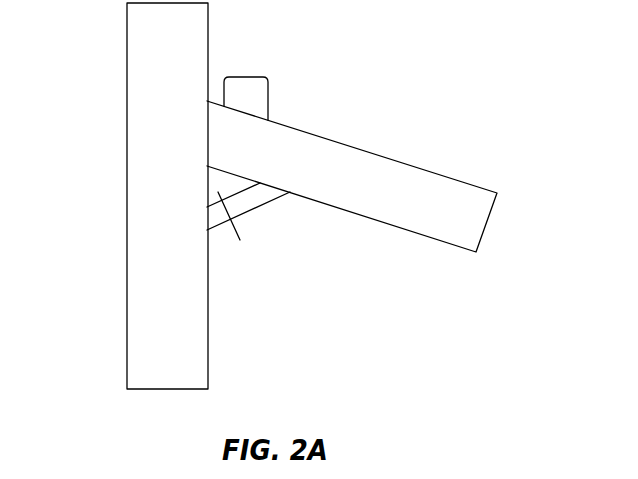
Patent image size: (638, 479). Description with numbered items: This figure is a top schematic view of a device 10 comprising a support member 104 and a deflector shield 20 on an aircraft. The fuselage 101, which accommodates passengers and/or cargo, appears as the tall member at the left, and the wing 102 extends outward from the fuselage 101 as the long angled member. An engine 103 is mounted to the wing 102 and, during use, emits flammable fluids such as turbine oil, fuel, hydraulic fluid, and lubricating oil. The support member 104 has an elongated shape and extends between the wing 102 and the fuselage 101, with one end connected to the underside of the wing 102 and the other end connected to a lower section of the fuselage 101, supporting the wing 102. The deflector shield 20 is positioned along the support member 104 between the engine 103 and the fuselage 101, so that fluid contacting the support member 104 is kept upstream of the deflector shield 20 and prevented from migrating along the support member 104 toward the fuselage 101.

The fuselage 101 is at (140, 50).
The wing 102 is at (427, 190).
The engine 103 is at (257, 93).
The support member 104 is at (245, 200).
The deflector shield 20 is at (238, 235).
The device 10 is at (266, 255).